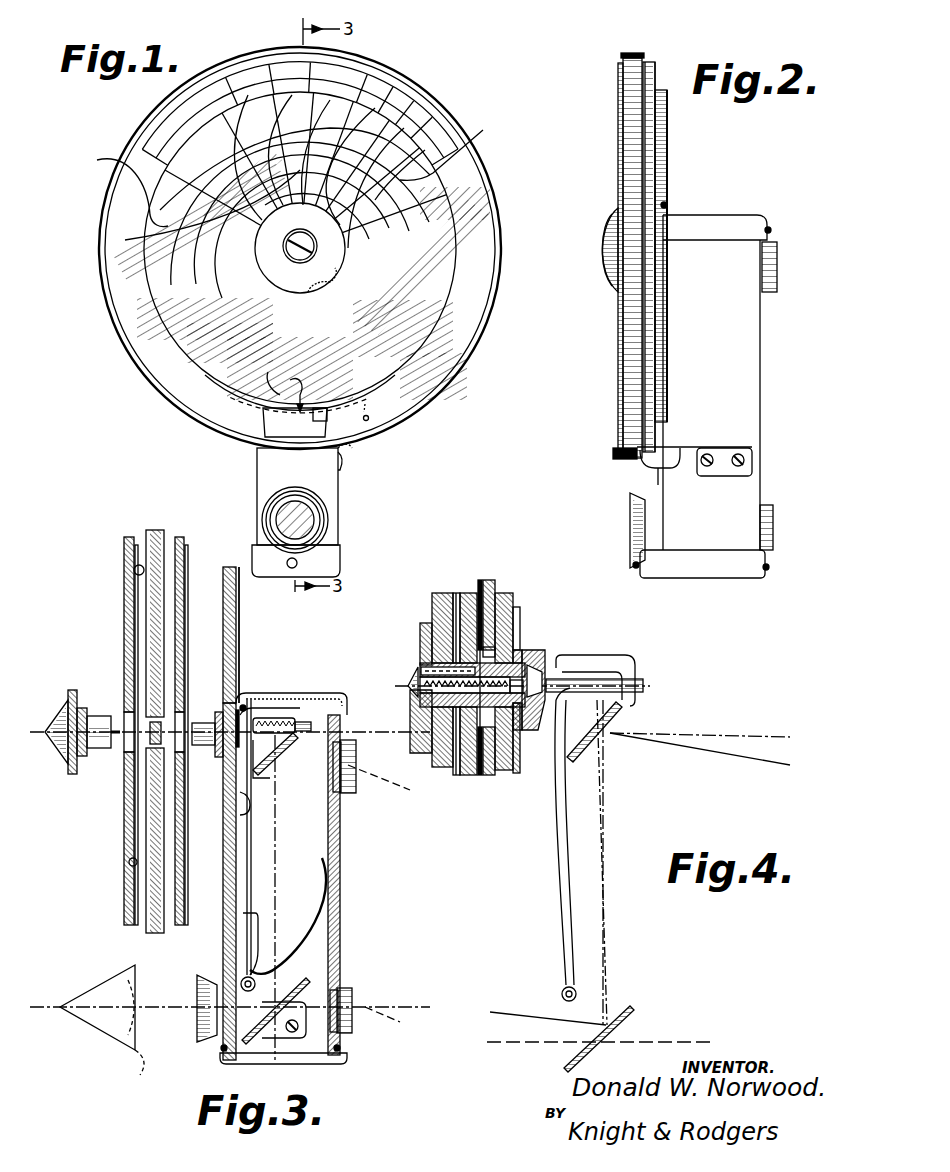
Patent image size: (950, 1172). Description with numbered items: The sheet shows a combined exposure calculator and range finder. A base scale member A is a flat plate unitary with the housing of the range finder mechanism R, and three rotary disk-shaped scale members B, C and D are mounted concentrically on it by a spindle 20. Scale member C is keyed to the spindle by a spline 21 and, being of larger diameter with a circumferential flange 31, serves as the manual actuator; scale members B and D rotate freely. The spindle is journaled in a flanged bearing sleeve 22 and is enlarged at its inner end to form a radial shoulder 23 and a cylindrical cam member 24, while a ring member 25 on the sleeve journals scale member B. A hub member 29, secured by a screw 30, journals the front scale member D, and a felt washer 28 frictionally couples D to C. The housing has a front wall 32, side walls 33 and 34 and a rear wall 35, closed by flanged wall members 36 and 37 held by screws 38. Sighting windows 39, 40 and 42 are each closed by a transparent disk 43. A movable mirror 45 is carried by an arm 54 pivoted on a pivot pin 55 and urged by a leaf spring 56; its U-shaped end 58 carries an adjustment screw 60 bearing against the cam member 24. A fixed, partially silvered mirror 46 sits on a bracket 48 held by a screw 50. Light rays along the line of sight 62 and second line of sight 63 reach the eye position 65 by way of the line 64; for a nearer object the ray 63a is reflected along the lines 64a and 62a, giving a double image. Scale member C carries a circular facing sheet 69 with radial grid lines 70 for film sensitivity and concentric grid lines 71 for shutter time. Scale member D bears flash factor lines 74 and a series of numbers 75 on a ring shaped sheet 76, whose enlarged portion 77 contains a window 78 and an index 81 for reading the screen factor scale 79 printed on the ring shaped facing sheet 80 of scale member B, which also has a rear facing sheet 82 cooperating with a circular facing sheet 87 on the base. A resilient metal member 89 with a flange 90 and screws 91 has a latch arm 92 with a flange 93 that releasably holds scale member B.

In FIG. 3, the spindle 20 is at (203, 746).
In FIG. 4, the spindle 20 is at (430, 705).
In FIG. 3, the spline 21 is at (98, 716).
In FIG. 4, the spline 21 is at (442, 667).
In FIG. 3, the flanged bearing sleeve 22 is at (238, 750).
In FIG. 4, the flanged bearing sleeve 22 is at (520, 732).
In FIG. 3, the radial shoulder 23 is at (238, 806).
In FIG. 4, the radial shoulder 23 is at (500, 650).
In FIG. 3, the cylindrical cam member 24 is at (252, 708).
In FIG. 4, the cylindrical cam member 24 is at (545, 660).
In FIG. 3, the ring member 25 is at (219, 712).
In FIG. 4, the ring member 25 is at (518, 650).
In FIG. 1, the felt washer 28 is at (322, 283).
In FIG. 2, the felt washer 28 is at (610, 212).
In FIG. 3, the felt washer 28 is at (85, 757).
In FIG. 4, the felt washer 28 is at (430, 625).
In FIG. 1, the hub member 29 is at (333, 255).
In FIG. 2, the hub member 29 is at (604, 282).
In FIG. 3, the hub member 29 is at (70, 758).
In FIG. 4, the hub member 29 is at (410, 735).
In FIG. 1, the screw 30 is at (292, 255).
In FIG. 3, the screw 30 is at (58, 712).
In FIG. 4, the screw 30 is at (410, 686).
In FIG. 1, the circumferential flange 31 is at (107, 290).
In FIG. 2, the circumferential flange 31 is at (613, 458).
In FIG. 3, the circumferential flange 31 is at (140, 928).
In FIG. 1, the front wall 32 is at (262, 470).
In FIG. 3, the front wall 32 is at (224, 892).
In FIG. 4, the front wall 32 is at (510, 772).
In FIG. 2, the side wall 33 is at (760, 325).
In FIG. 3, the side wall 34 is at (302, 804).
In FIG. 3, the rear wall 35 is at (341, 912).
In FIG. 2, the flanged wall member 36 is at (738, 214).
In FIG. 3, the flanged wall member 36 is at (308, 693).
In FIG. 1, the flanged wall member 37 is at (322, 573).
In FIG. 2, the flanged wall member 37 is at (713, 578).
In FIG. 3, the flanged wall member 37 is at (285, 1065).
In FIG. 1, the screws 38 is at (288, 566).
In FIG. 2, the screws 38 is at (668, 203).
In FIG. 3, the screws 38 is at (244, 705).
In FIG. 1, the sighting window 39 is at (322, 514).
In FIG. 2, the sighting window 39 is at (631, 525).
In FIG. 3, the sighting window 39 is at (200, 1032).
In FIG. 2, the sighting window 40 is at (774, 518).
In FIG. 3, the sighting window 40 is at (352, 1000).
In FIG. 2, the third sighting window 42 is at (776, 278).
In FIG. 3, the third sighting window 42 is at (350, 780).
In FIG. 1, the transparent disk 43 is at (306, 527).
In FIG. 3, the transparent disk 43 is at (332, 768).
In FIG. 3, the mirror 45 is at (287, 754).
In FIG. 4, the mirror 45 is at (590, 760).
In FIG. 3, the mirror 46 is at (300, 964).
In FIG. 4, the mirror 46 is at (624, 1000).
In FIG. 3, the bracket 48 is at (270, 1038).
In FIG. 3, the screw 50 is at (295, 1033).
In FIG. 3, the arm 54 is at (254, 880).
In FIG. 4, the arm 54 is at (560, 855).
In FIG. 3, the pivot pin 55 is at (254, 978).
In FIG. 4, the pivot pin 55 is at (562, 988).
In FIG. 3, the leaf spring 56 is at (313, 930).
In FIG. 3, the U-shaped end 58 is at (275, 718).
In FIG. 4, the U-shaped end 58 is at (585, 660).
In FIG. 3, the adjustment screw 60 is at (300, 727).
In FIG. 4, the adjustment screw 60 is at (632, 684).
In FIG. 3, the line of sight 62 is at (394, 1021).
In FIG. 4, the line of sight 62 is at (520, 1044).
In FIG. 4, the line 62a is at (520, 1012).
In FIG. 3, the second line of sight 63 is at (382, 778).
In FIG. 4, the second line of sight 63 is at (762, 733).
In FIG. 4, the line 63a is at (735, 752).
In FIG. 3, the line 64 is at (276, 845).
In FIG. 4, the line 64 is at (604, 908).
In FIG. 4, the line 64a is at (606, 950).
In FIG. 3, the eye position 65 is at (104, 1021).
In FIG. 3, the circular facing sheet 69 is at (140, 822).
In FIG. 4, the circular facing sheet 69 is at (450, 590).
In FIG. 1, the radial grid lines 70 is at (120, 187).
In FIG. 1, the concentric grid lines 71 is at (395, 195).
In FIG. 1, the lines 74 is at (453, 149).
In FIG. 1, the series of numbers 75 is at (355, 75).
In FIG. 1, the ring shaped sheet 76 is at (455, 356).
In FIG. 3, the ring shaped sheet 76 is at (126, 582).
In FIG. 4, the ring shaped sheet 76 is at (452, 770).
In FIG. 1, the portion of enlarged width 77 is at (266, 370).
In FIG. 3, the portion of enlarged width 77 is at (130, 862).
In FIG. 1, the window 78 is at (327, 414).
In FIG. 3, the window 78 is at (125, 912).
In FIG. 1, the screen factor scale 79 is at (285, 430).
In FIG. 2, the ring shaped facing sheet 80 is at (657, 325).
In FIG. 3, the ring shaped facing sheet 80 is at (177, 926).
In FIG. 4, the ring shaped facing sheet 80 is at (480, 778).
In FIG. 1, the index 81 is at (296, 385).
In FIG. 2, the facing sheet 82 is at (656, 296).
In FIG. 3, the facing sheet 82 is at (189, 918).
In FIG. 4, the facing sheet 82 is at (498, 590).
In FIG. 2, the circular facing sheet 87 is at (668, 150).
In FIG. 3, the circular facing sheet 87 is at (240, 620).
In FIG. 4, the circular facing sheet 87 is at (518, 610).
In FIG. 2, the resilient metal member 89 is at (707, 452).
In FIG. 2, the flange 90 is at (723, 476).
In FIG. 2, the screws 91 is at (739, 452).
In FIG. 1, the latch arm 92 is at (355, 449).
In FIG. 2, the latch arm 92 is at (662, 446).
In FIG. 1, the flange 93 is at (342, 466).
In FIG. 2, the flange 93 is at (660, 472).
In FIG. 2, the base scale member A is at (662, 90).
In FIG. 3, the base scale member A is at (230, 566).
In FIG. 4, the base scale member A is at (508, 600).
In FIG. 2, the scale member B is at (650, 62).
In FIG. 3, the scale member B is at (182, 537).
In FIG. 4, the scale member B is at (490, 580).
In FIG. 1, the scale member C is at (495, 182).
In FIG. 2, the scale member C is at (632, 52).
In FIG. 3, the scale member C is at (154, 530).
In FIG. 4, the scale member C is at (470, 590).
In FIG. 1, the scale member D is at (468, 163).
In FIG. 2, the scale member D is at (614, 62).
In FIG. 3, the scale member D is at (130, 535).
In FIG. 4, the scale member D is at (442, 588).
In FIG. 1, the range finder mechanism R is at (343, 484).
In FIG. 2, the range finder mechanism R is at (768, 374).
In FIG. 3, the range finder mechanism R is at (347, 850).